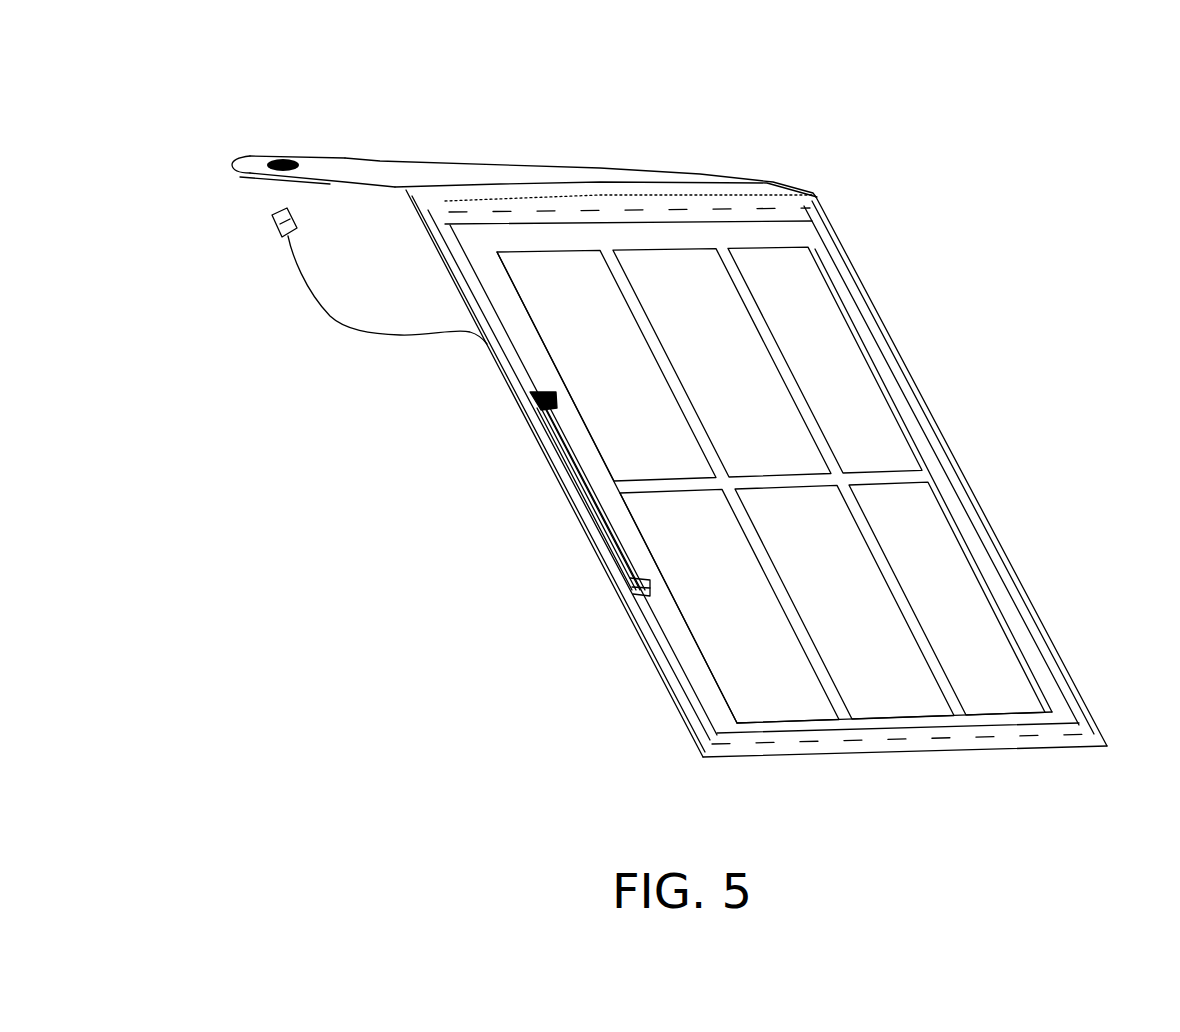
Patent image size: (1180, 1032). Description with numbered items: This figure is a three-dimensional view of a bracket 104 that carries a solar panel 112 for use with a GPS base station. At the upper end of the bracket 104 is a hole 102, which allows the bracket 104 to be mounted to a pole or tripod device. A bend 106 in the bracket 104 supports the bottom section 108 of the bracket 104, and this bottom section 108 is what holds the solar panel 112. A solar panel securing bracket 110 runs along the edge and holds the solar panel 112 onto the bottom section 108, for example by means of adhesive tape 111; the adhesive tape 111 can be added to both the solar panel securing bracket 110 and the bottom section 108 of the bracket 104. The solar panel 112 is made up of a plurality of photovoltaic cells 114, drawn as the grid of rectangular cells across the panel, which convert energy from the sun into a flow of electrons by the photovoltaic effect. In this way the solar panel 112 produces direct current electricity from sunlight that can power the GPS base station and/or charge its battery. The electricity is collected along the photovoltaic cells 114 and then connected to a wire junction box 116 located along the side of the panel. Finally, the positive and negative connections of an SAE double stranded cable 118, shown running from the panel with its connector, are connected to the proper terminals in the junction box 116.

The hole 102 is at (287, 158).
The bracket 104 is at (388, 167).
The bend 106 is at (772, 183).
The bottom section 108 is at (1010, 560).
The solar panel securing bracket 110 is at (853, 268).
The adhesive tape 111 is at (900, 353).
The solar panel 112 is at (950, 453).
The photovoltaic cells 114 is at (727, 650).
The wire junction box 116 is at (557, 485).
The SAE double stranded cable 118 is at (402, 340).